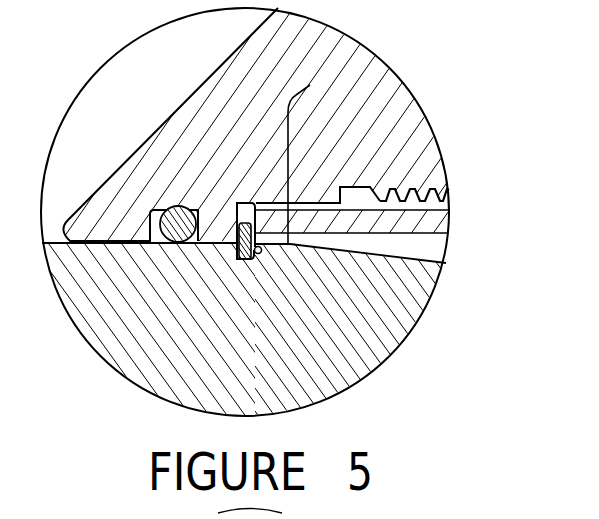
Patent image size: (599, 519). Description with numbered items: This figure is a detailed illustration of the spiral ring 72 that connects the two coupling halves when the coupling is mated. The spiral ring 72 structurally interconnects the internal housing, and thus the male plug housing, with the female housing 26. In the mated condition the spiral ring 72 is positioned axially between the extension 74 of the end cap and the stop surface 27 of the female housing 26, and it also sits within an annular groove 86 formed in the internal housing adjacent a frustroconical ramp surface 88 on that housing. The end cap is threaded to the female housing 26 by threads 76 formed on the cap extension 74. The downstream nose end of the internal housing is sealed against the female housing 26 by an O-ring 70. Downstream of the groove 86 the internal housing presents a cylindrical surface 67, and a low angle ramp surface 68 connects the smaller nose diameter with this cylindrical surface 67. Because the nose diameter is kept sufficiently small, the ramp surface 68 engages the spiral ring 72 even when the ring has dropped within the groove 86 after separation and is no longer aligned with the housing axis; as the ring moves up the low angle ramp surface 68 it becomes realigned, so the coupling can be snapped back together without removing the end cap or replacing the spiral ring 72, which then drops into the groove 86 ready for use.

The female housing 26 is at (400, 100).
The stop surface 27 is at (253, 203).
The cylindrical surface 67 is at (310, 85).
The low angle ramp surface 68 is at (421, 256).
The O-ring 70 is at (173, 228).
The spiral ring 72 is at (236, 246).
The extension of the cap 74 is at (308, 225).
The threads 76 is at (413, 192).
The annular groove 86 is at (247, 260).
The frustroconical ramp surface 88 is at (261, 252).